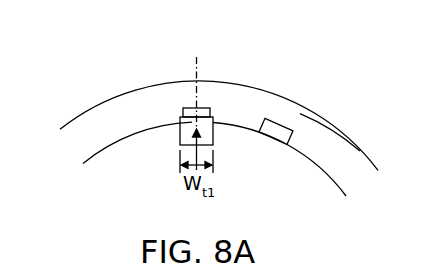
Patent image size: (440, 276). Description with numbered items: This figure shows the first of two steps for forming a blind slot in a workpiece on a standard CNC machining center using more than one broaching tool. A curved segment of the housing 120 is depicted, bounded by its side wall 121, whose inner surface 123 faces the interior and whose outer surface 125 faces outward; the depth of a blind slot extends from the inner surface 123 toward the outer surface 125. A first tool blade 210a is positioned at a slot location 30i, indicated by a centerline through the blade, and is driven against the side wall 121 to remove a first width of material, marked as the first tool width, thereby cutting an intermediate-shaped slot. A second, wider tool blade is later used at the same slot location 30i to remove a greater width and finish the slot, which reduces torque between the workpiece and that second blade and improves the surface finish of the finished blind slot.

The housing 120 is at (222, 112).
The side wall 121 is at (105, 116).
The inner surface 123 is at (322, 170).
The outer surface 125 is at (331, 124).
The first tool blade 210a is at (180, 129).
The slot location 30i is at (194, 80).